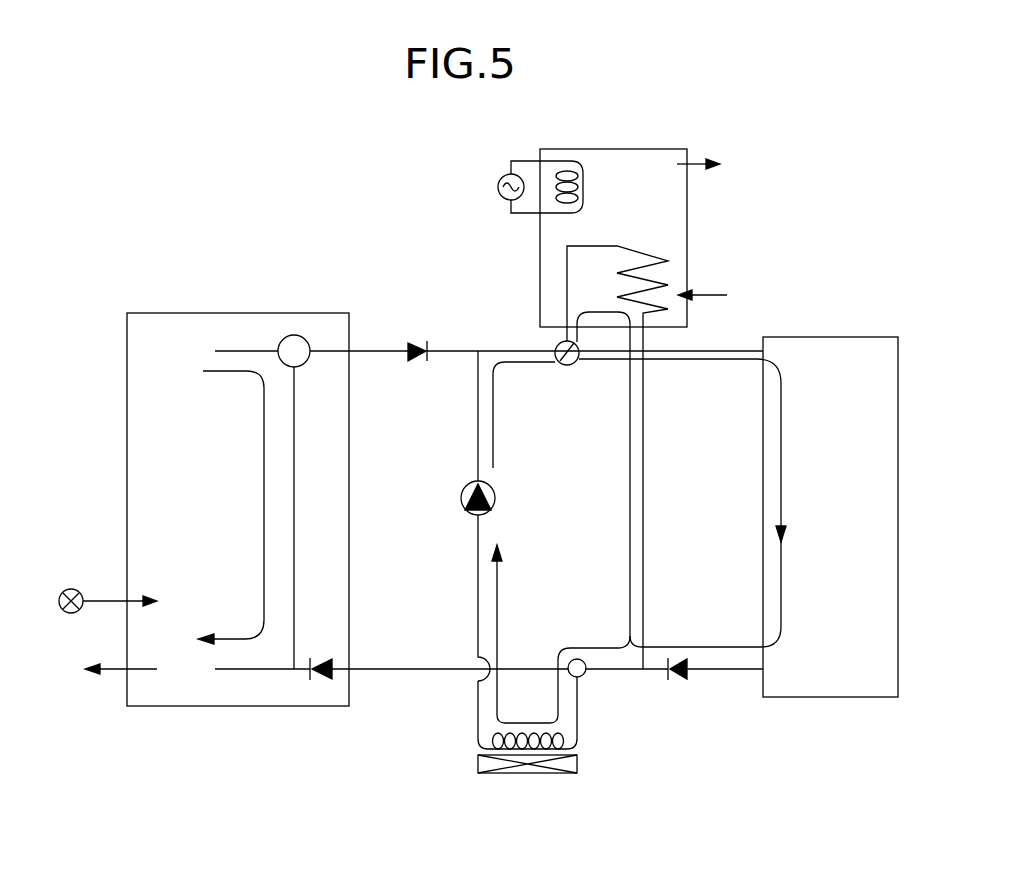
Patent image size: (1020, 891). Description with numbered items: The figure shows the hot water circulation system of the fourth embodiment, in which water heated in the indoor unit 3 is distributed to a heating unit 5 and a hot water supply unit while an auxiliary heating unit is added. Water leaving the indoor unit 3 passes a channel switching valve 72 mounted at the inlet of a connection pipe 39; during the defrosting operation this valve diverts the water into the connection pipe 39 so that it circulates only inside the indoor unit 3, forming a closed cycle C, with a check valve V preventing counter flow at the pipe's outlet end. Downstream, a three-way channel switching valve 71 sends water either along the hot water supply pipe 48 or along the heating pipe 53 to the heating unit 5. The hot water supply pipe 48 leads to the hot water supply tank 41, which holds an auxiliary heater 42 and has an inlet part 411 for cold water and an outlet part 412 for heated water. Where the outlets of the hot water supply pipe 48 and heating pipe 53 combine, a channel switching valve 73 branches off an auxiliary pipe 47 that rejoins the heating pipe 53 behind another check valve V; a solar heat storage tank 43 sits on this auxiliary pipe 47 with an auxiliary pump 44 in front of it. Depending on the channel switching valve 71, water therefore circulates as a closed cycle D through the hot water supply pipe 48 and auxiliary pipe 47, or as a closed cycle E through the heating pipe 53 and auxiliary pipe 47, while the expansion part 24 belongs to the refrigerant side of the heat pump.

The indoor unit 3 is at (212, 312).
The heating unit 5 is at (828, 336).
The expansion part 24 is at (72, 589).
The connection pipe 39 is at (294, 498).
The hot water supply tank 41 is at (618, 148).
The auxiliary heater 42 is at (511, 169).
The heat storage tank 43 is at (527, 777).
The auxiliary pump 44 is at (462, 489).
The auxiliary pipe 47 is at (478, 706).
The hot water supply pipe 48 is at (620, 245).
The heating pipe 53 is at (695, 360).
The channel switching valve 71 is at (568, 366).
The channel switching valve 72 is at (294, 335).
The channel switching valve 73 is at (580, 678).
The inlet part 411 is at (723, 295).
The outlet part 412 is at (723, 167).
The check valve V is at (421, 340).
The closed cycle C is at (264, 513).
The closed cycle D is at (630, 477).
The closed cycle E is at (781, 502).